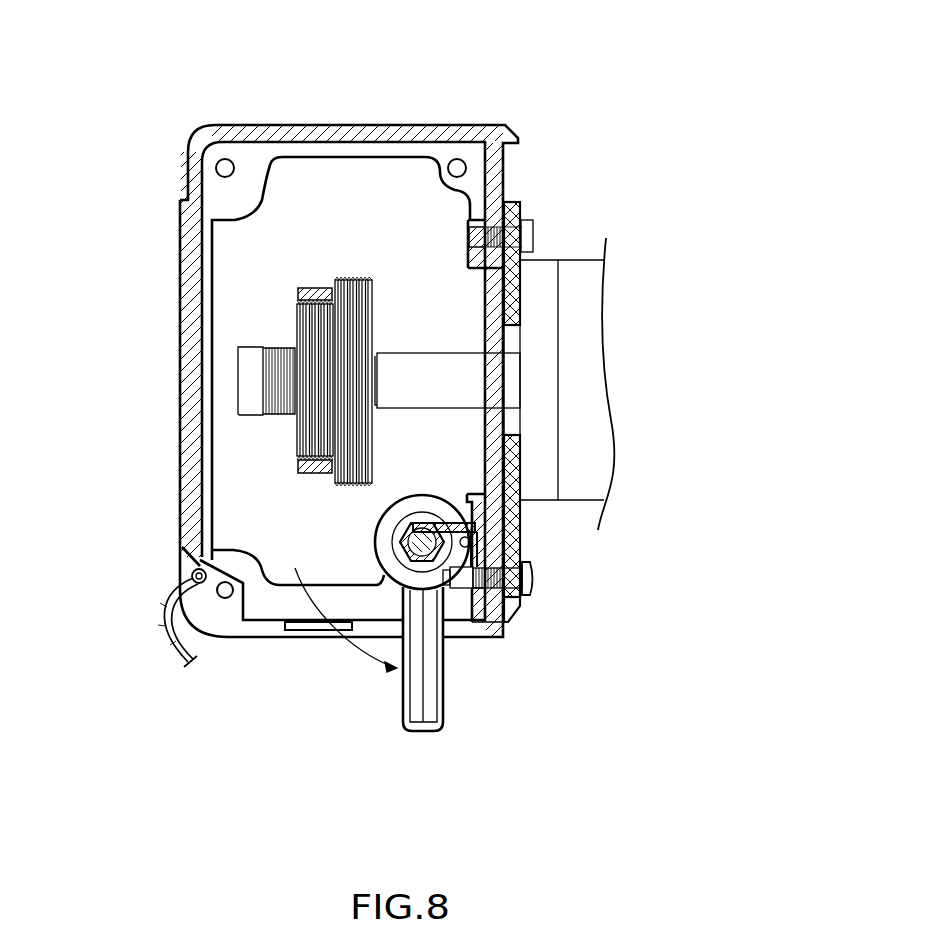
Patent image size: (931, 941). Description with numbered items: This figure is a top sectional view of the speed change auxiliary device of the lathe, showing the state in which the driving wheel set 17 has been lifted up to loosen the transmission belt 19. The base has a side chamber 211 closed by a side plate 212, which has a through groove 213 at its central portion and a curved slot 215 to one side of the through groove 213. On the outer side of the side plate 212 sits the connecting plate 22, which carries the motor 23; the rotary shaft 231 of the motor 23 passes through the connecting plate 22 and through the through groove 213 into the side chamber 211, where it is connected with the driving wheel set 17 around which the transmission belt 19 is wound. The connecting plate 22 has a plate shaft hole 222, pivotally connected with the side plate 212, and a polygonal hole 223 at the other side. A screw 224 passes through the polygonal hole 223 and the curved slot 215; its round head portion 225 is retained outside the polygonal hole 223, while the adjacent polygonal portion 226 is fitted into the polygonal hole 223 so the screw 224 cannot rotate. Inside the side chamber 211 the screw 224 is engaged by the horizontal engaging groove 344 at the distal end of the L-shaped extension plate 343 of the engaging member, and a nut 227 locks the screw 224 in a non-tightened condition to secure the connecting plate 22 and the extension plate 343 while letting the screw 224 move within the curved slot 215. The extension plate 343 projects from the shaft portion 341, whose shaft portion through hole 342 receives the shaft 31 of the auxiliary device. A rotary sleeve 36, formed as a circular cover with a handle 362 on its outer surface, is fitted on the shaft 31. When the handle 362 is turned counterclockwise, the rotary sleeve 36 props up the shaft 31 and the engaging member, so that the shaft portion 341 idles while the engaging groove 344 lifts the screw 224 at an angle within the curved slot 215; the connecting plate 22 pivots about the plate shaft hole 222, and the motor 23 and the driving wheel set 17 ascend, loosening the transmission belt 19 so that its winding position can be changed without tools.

The driving wheel set 17 is at (290, 330).
The transmission belt 19 is at (317, 286).
The side chamber 211 is at (345, 205).
The side plate 212 is at (520, 477).
The through groove 213 is at (515, 340).
The curved slot 215 is at (522, 612).
The connecting plate 22 is at (623, 427).
The plate shaft hole 222 is at (522, 212).
The polygonal hole 223 is at (530, 587).
The screw 224 is at (528, 607).
The round head portion 225 is at (530, 570).
The polygonal portion 226 is at (610, 618).
The nut 227 is at (457, 593).
The motor 23 is at (582, 353).
The rotary shaft 231 is at (392, 363).
The shaft 31 is at (320, 669).
The shaft portion 341 is at (413, 530).
The shaft portion through hole 342 is at (422, 542).
The extension plate 343 is at (520, 525).
The engaging groove 344 is at (487, 605).
The rotary sleeve 36 is at (405, 540).
The handle 362 is at (408, 690).